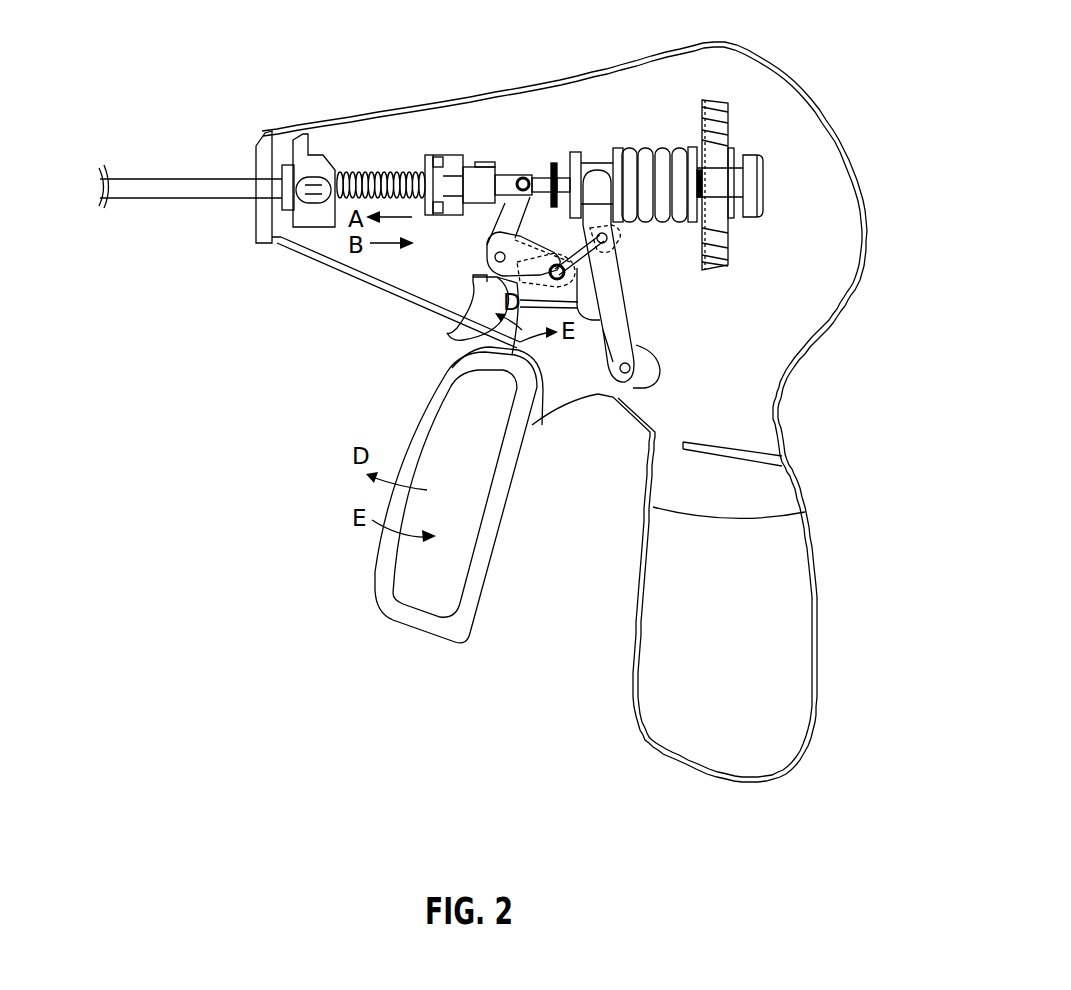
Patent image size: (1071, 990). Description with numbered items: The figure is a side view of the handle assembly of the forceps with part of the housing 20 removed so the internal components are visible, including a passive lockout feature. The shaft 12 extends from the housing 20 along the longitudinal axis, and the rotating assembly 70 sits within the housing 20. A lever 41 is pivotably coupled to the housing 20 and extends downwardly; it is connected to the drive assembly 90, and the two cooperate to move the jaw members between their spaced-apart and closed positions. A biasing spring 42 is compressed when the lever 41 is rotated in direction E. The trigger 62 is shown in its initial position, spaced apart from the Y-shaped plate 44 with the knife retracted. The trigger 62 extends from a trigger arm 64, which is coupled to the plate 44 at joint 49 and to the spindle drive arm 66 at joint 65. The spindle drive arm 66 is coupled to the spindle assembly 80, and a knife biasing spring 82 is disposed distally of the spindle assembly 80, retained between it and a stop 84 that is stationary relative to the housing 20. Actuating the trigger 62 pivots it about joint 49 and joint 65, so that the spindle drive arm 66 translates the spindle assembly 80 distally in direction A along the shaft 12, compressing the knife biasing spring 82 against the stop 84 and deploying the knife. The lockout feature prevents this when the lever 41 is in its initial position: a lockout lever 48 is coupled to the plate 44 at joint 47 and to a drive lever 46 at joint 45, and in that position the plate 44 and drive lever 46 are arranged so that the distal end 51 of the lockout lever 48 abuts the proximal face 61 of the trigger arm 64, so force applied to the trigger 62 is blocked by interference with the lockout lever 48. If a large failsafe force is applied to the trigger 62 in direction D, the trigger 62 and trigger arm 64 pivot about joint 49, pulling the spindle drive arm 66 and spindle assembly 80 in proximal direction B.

The shaft 12 is at (523, 177).
The housing 20 is at (803, 84).
The lever 41 is at (505, 520).
The spring 42 is at (663, 147).
The Y-shaped plate 44 is at (512, 345).
The joint 45 is at (618, 246).
The drive lever 46 is at (620, 323).
The joint 47 is at (632, 280).
The lockout lever 48 is at (628, 252).
The joint 49 is at (472, 278).
The distal end 51 is at (455, 300).
The proximal face 61 is at (487, 253).
The trigger 62 is at (445, 333).
The trigger arm 64 is at (487, 228).
The joint 65 is at (537, 153).
The spindle drive arm 66 is at (487, 162).
The rotating assembly 70 is at (708, 100).
The spindle assembly 80 is at (447, 145).
The knife biasing spring 82 is at (386, 172).
The stop 84 is at (306, 132).
The drive assembly 90 is at (545, 148).